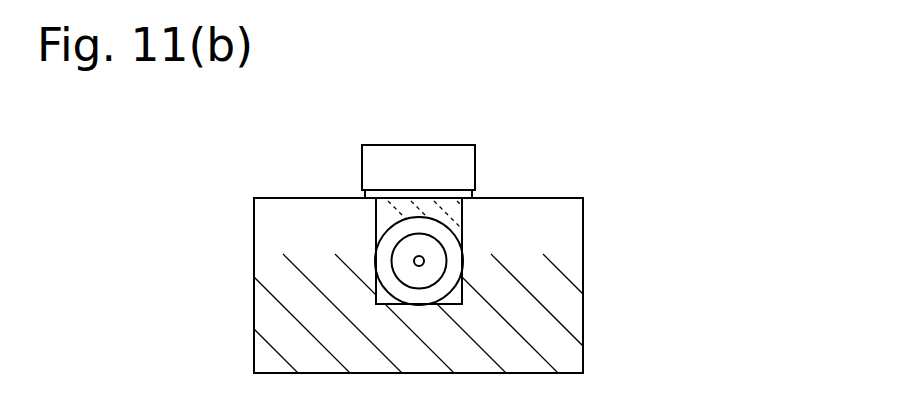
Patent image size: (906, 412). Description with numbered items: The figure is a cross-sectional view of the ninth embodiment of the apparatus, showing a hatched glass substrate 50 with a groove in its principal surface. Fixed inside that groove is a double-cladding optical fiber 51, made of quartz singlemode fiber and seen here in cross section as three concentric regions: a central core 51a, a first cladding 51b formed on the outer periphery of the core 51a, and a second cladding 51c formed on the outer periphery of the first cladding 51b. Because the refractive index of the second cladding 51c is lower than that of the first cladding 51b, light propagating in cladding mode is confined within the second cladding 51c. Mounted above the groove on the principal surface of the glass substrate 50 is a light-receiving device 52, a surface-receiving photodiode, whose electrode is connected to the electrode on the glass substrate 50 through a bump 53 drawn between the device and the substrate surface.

The glass substrate 50 is at (583, 330).
The double-cladding optical fiber 51 is at (565, 249).
The core 51a is at (423, 264).
The first cladding 51b is at (443, 250).
The second cladding 51c is at (448, 225).
The light-receiving device 52 is at (422, 145).
The bump 53 is at (478, 193).